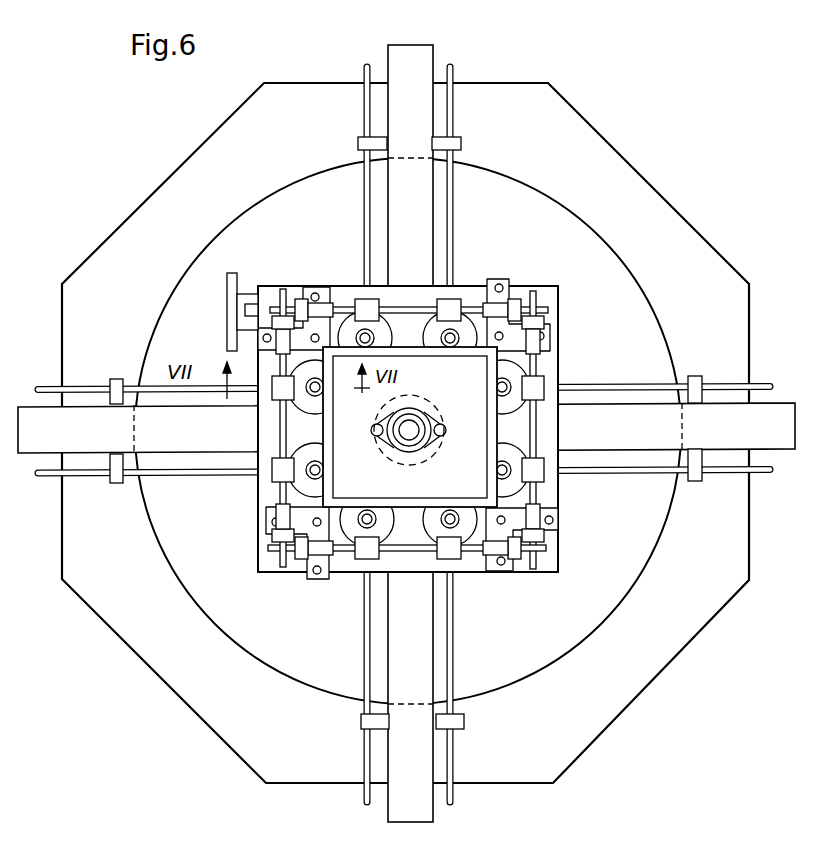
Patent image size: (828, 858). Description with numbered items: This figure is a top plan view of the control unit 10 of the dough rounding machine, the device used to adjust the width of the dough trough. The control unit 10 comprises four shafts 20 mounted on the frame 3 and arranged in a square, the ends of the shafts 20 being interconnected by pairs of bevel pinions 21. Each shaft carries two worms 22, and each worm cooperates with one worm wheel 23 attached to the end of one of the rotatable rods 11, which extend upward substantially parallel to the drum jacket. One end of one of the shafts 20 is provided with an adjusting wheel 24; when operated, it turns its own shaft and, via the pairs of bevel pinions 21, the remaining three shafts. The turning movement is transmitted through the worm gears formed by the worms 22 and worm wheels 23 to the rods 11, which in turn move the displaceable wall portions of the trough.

The frame 3 is at (412, 62).
The control unit 10 is at (349, 284).
The rotatable rods 11 is at (365, 96).
The shafts 20 is at (560, 428).
The bevel pinions 21 is at (527, 560).
The worms 22 is at (272, 406).
The worm wheel 23 is at (428, 296).
The adjusting wheel 24 is at (228, 293).